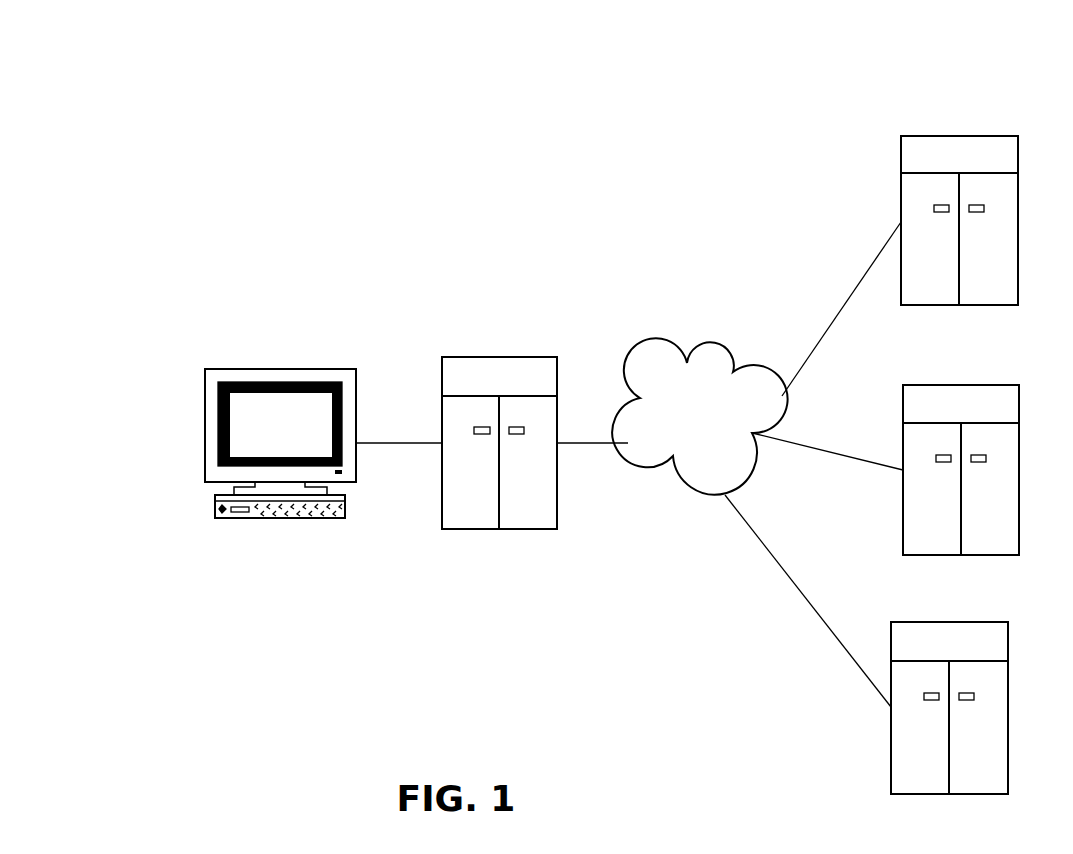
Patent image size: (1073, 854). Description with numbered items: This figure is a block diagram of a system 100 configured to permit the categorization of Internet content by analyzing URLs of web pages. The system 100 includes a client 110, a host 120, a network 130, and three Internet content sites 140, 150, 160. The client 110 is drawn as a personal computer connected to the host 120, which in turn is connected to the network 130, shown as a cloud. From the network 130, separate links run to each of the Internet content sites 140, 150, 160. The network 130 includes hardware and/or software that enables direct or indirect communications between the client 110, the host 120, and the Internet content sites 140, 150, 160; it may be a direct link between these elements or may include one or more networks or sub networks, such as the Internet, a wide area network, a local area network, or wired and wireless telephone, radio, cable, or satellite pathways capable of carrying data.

The system 100 is at (610, 29).
The client 110 is at (277, 369).
The host 120 is at (478, 357).
The network 130 is at (662, 352).
The Internet content site 140 is at (1018, 173).
The Internet content site 150 is at (1019, 423).
The Internet content site 160 is at (1008, 661).